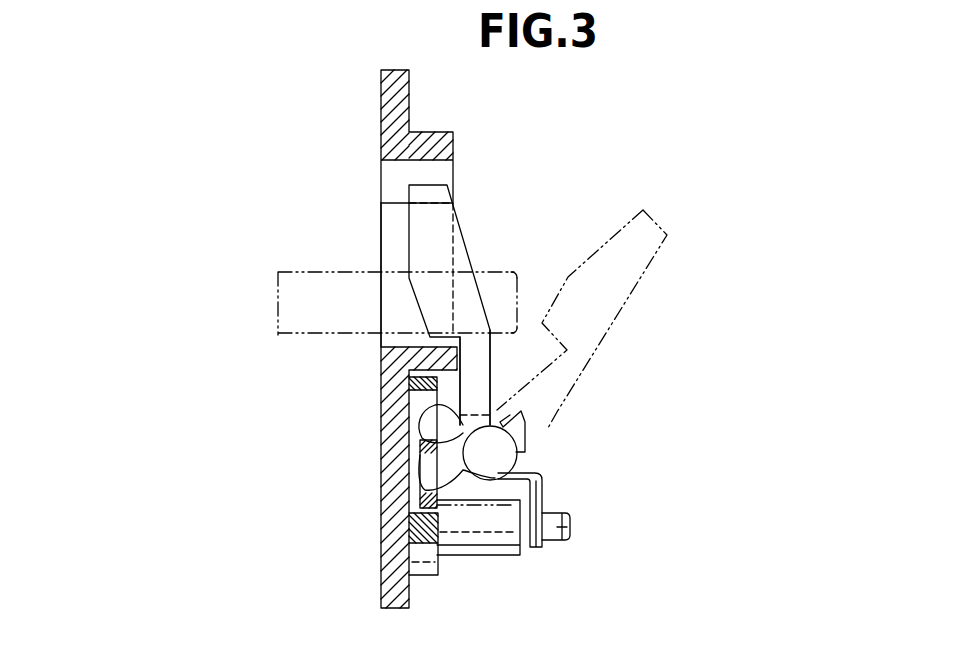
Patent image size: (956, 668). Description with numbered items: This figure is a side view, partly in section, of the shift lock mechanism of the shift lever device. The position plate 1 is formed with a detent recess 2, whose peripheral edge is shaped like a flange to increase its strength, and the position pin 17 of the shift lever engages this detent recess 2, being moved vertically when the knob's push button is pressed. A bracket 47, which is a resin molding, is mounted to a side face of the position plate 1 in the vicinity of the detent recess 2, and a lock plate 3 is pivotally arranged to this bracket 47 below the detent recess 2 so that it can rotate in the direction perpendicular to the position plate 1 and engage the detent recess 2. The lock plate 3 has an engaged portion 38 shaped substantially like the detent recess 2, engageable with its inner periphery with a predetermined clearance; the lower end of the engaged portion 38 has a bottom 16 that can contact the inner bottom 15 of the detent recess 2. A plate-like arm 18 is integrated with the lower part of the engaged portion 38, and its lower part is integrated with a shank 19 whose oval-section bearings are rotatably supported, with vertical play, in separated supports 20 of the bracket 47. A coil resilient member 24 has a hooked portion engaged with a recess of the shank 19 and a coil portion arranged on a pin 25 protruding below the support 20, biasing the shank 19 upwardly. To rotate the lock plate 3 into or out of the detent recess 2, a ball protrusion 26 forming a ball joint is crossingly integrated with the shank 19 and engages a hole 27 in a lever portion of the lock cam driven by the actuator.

The position plate 1 is at (380, 92).
The detent recess 2 is at (397, 262).
The lock plate 3 is at (440, 240).
The inner bottom 15 is at (390, 338).
The bottom 16 is at (405, 352).
The position pin 17 is at (297, 325).
The plate-like arm 18 is at (482, 360).
The shank 19 is at (523, 410).
The support 20 is at (527, 445).
The resilient member 24 is at (537, 548).
The pin 25 is at (558, 533).
The ball protrusion 26 is at (420, 487).
The hole 27 is at (418, 458).
The engaged portion 38 is at (405, 217).
The bracket 47 is at (425, 575).